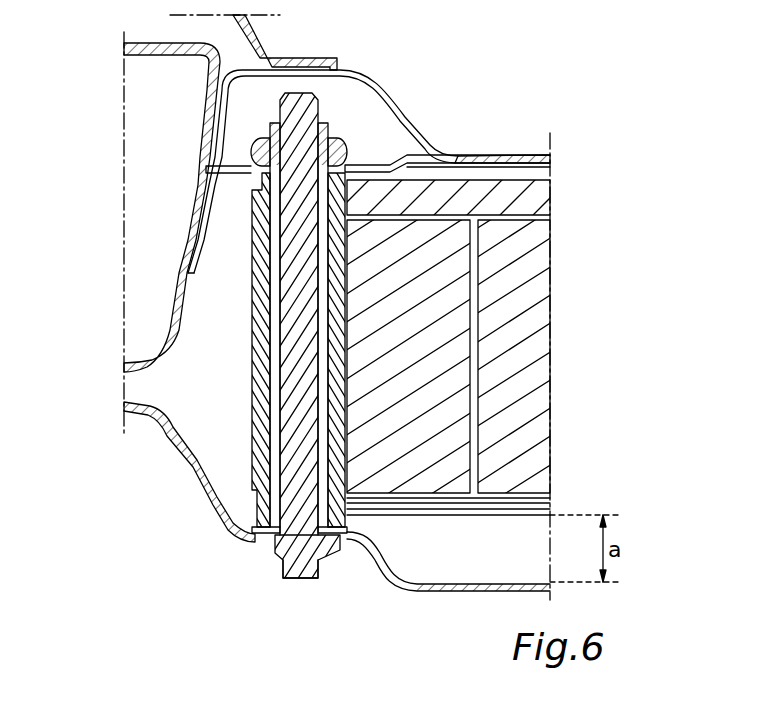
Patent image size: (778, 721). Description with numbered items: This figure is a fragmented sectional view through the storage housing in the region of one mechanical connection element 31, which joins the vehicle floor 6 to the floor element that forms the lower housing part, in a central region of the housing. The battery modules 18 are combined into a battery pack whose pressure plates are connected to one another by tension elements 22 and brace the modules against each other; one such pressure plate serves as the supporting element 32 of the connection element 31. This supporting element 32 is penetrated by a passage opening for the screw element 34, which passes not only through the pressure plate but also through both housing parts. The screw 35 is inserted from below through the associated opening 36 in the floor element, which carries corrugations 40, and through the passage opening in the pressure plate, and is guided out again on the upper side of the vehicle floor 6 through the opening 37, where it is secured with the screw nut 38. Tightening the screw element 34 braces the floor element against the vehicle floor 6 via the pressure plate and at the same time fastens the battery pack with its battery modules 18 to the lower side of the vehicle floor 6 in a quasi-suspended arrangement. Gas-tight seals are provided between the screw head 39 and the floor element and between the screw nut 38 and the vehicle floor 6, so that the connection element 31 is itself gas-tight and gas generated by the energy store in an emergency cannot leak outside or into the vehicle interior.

The vehicle floor 6 is at (456, 153).
The battery module 18 is at (608, 245).
The tension elements 22 is at (540, 189).
The mechanical connection element 31 is at (208, 403).
The supporting element 32 is at (262, 423).
The screw element 34 is at (299, 475).
The screw 35 is at (290, 460).
The opening 36 is at (325, 550).
The opening 37 is at (373, 166).
The screw nut 38 is at (338, 166).
The screw head 39 is at (300, 557).
The corrugations 40 is at (368, 575).